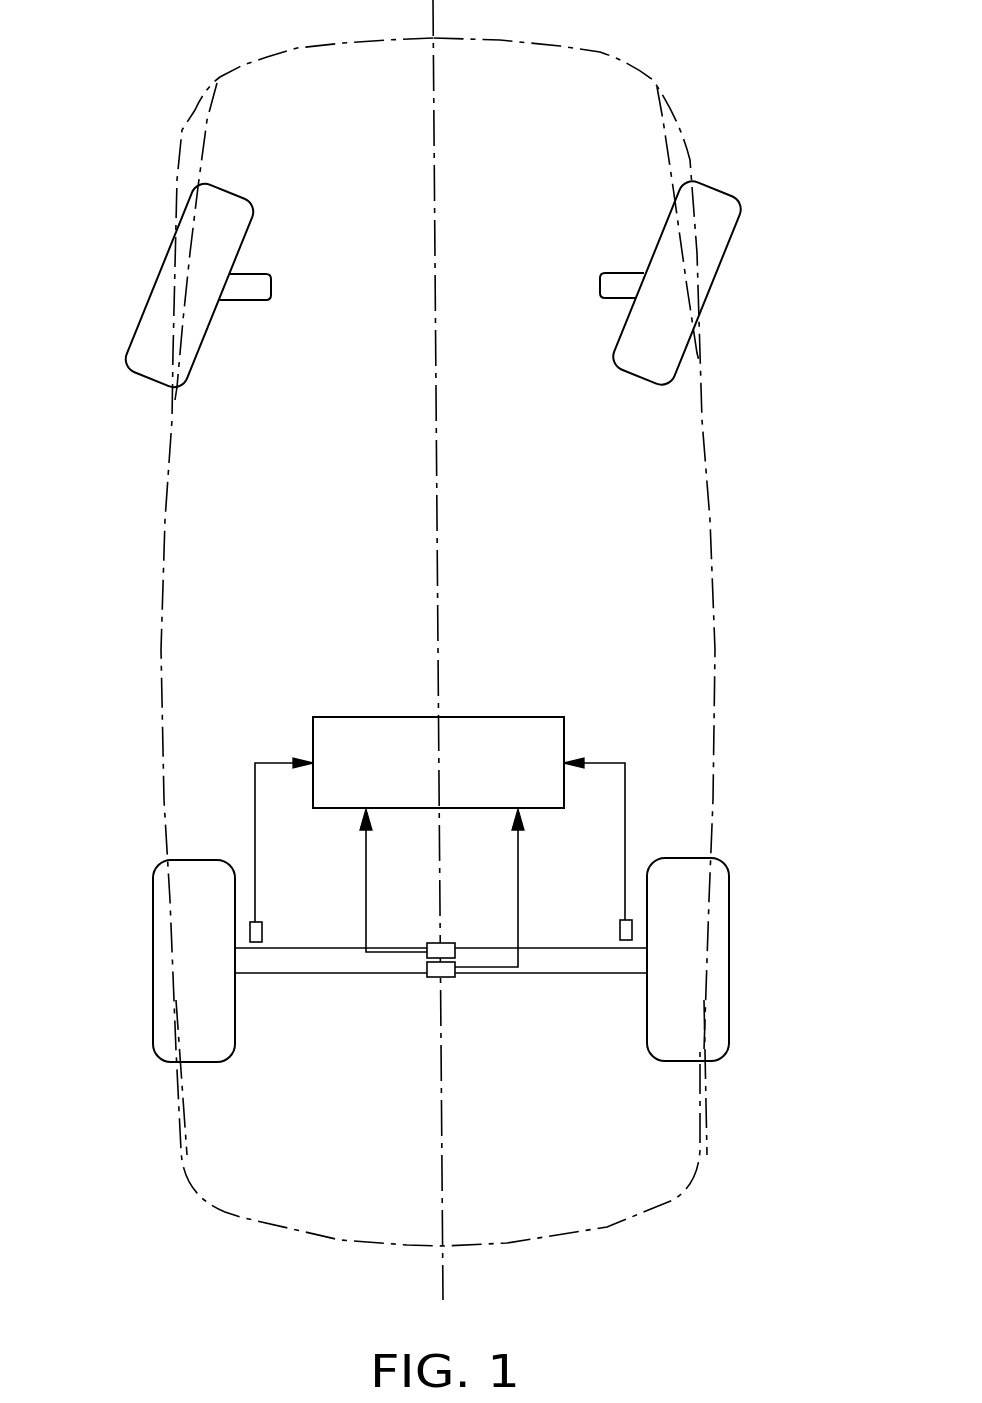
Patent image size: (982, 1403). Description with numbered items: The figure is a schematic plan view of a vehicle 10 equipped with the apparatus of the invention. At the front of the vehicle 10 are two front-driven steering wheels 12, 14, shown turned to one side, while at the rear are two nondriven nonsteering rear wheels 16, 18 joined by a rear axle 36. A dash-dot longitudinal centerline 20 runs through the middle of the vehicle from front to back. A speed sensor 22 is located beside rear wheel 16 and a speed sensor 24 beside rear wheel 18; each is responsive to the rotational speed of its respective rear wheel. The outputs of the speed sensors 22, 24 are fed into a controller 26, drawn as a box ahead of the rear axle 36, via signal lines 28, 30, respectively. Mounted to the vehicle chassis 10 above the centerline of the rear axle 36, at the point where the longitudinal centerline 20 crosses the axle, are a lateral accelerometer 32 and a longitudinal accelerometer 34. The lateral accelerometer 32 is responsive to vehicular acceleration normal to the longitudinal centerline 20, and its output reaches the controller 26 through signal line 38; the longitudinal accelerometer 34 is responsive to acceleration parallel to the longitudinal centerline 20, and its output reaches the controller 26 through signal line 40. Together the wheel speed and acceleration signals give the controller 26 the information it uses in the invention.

The vehicle 10 is at (668, 64).
The front-driven steering wheel 12 is at (147, 345).
The front-driven steering wheel 14 is at (720, 223).
The nondriven nonsteering rear wheel 16 is at (165, 1017).
The nondriven nonsteering rear wheel 18 is at (720, 1005).
The longitudinal centerline 20 is at (445, 1270).
The speed sensor 22 is at (262, 930).
The speed sensor 24 is at (622, 932).
The controller 26 is at (542, 730).
The signal line 28 is at (278, 758).
The signal line 30 is at (608, 758).
The lateral accelerometer 32 is at (430, 943).
The longitudinal accelerometer 34 is at (437, 977).
The rear axle 36 is at (320, 962).
The signal line 38 is at (365, 870).
The signal line 40 is at (520, 883).